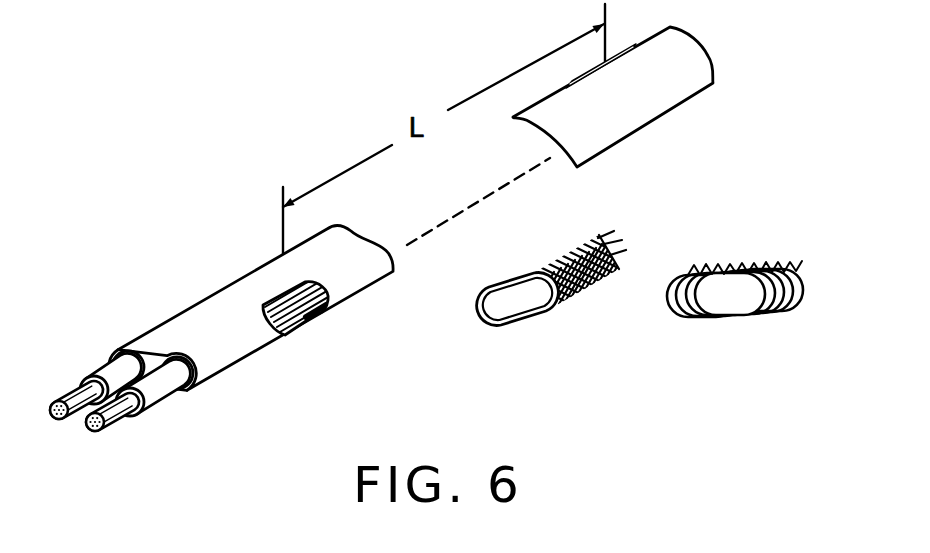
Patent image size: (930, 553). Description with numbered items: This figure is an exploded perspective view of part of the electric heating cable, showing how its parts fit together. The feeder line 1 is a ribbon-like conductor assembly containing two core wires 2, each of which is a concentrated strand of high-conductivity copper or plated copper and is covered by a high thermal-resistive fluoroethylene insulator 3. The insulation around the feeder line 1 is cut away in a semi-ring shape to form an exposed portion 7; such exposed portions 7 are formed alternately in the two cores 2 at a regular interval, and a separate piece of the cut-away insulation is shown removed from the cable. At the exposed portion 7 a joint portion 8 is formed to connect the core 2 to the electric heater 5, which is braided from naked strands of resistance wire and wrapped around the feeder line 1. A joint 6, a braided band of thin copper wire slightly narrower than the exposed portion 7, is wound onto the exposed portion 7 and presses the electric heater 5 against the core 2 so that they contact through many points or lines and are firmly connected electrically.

The feeder line 1 is at (322, 142).
The core wire 2 is at (72, 398).
The insulator 3 is at (110, 367).
The electric heater 5 is at (553, 326).
The joint 6 is at (746, 252).
The exposed portion 7 is at (272, 302).
The joint portion 8 is at (309, 323).